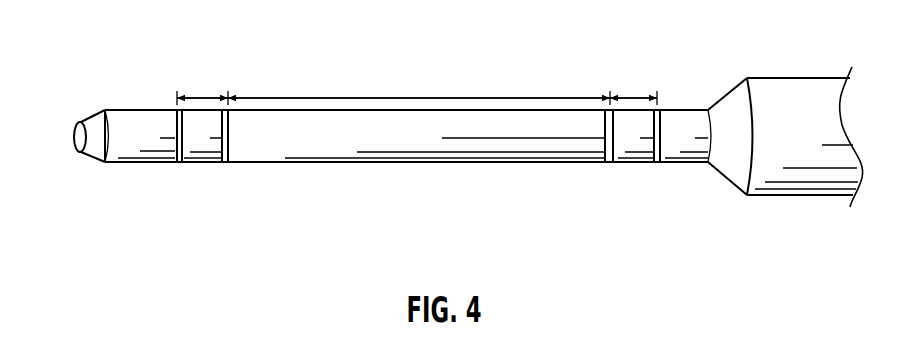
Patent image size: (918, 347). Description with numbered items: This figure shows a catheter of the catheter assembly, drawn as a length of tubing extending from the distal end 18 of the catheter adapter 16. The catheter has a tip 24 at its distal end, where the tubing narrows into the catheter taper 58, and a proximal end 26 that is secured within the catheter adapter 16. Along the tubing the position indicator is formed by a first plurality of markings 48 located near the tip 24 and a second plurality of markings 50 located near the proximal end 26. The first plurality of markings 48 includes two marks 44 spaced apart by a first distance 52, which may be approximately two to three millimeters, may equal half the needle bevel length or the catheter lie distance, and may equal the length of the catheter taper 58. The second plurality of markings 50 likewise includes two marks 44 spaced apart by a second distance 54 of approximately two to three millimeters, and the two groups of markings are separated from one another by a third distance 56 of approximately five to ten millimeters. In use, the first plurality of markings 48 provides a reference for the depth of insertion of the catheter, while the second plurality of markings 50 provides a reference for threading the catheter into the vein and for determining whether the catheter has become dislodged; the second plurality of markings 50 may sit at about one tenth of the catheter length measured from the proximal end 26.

The catheter adapter 16 is at (790, 88).
The distal end 18 is at (725, 186).
The tip 24 is at (98, 109).
The proximal end 26 is at (708, 108).
The marks 44 is at (178, 164).
The first plurality of markings 48 is at (203, 174).
The second plurality of markings 50 is at (632, 172).
The first distance 52 is at (203, 97).
The second distance 54 is at (633, 97).
The third distance 56 is at (426, 97).
The catheter taper 58 is at (93, 157).